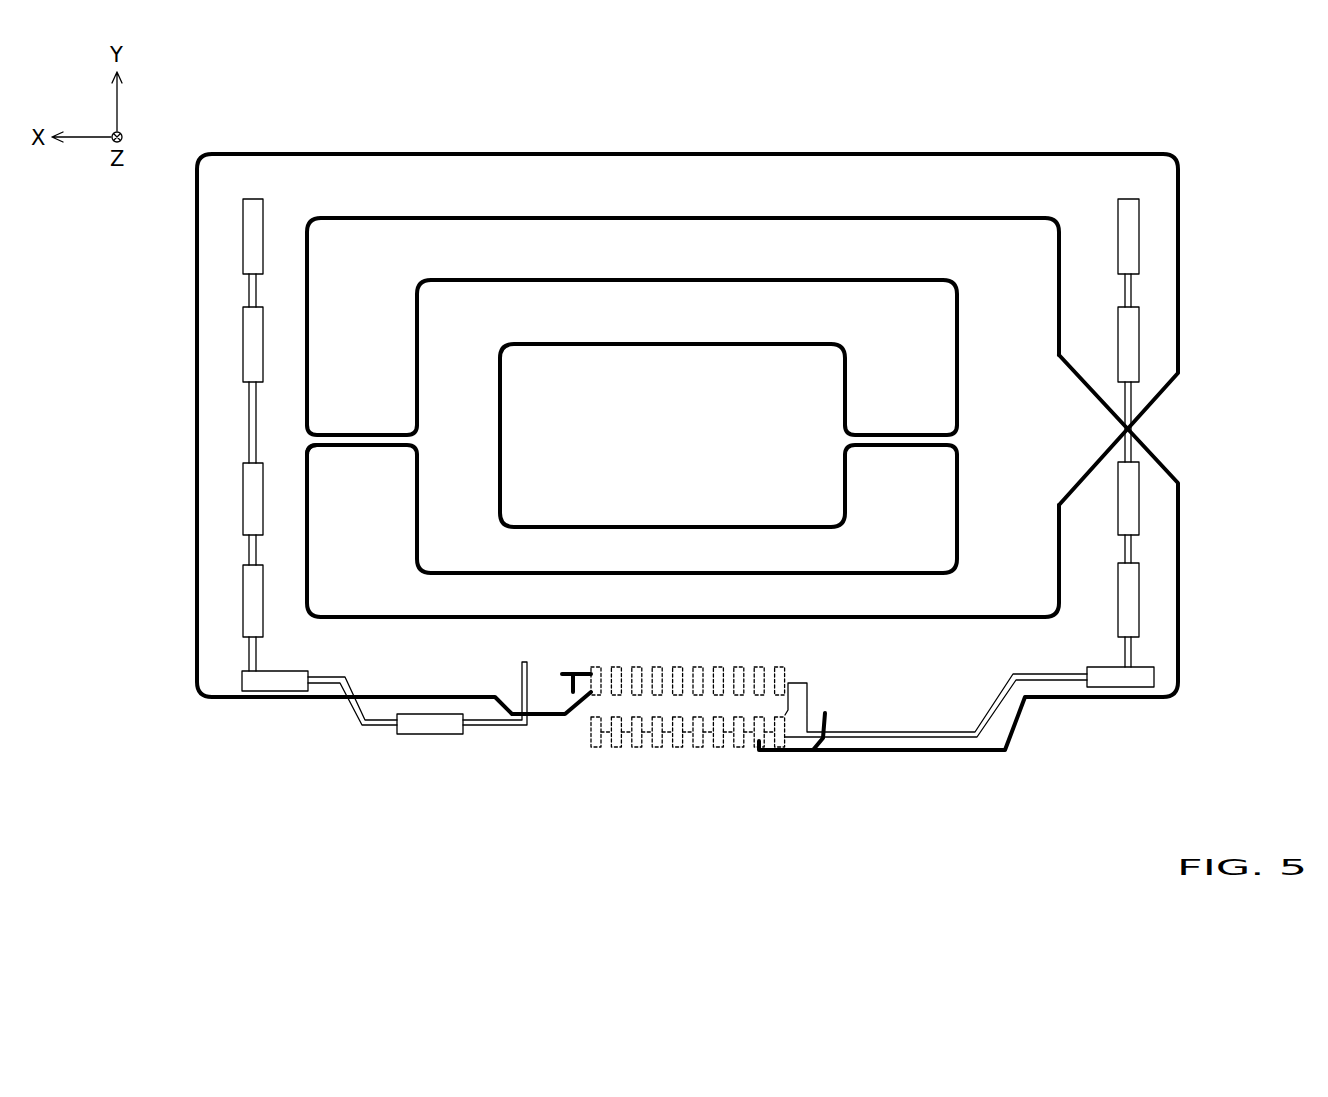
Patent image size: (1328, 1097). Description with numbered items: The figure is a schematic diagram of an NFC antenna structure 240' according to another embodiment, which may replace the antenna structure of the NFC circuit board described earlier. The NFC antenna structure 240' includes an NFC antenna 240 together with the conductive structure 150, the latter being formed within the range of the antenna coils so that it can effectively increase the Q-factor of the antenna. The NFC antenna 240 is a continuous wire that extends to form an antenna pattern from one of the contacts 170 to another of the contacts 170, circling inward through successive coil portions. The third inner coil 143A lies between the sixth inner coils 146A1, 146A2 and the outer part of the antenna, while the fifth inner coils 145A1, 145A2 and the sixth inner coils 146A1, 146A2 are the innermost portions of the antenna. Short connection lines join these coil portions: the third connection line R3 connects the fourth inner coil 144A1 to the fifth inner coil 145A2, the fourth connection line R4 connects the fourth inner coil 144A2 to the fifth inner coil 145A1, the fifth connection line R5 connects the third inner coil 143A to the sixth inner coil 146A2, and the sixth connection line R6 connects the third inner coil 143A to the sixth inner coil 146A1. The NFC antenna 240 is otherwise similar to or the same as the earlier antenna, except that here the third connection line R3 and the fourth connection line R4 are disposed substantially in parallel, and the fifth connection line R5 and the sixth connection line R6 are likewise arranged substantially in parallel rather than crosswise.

The NFC antenna structure 240' is at (687, 405).
The NFC antenna 240 is at (690, 361).
The third inner coil 143A is at (307, 330).
The sixth connection line R6 is at (365, 433).
The fifth connection line R5 is at (364, 448).
The sixth inner coil 146A1 is at (417, 357).
The sixth inner coil 146A2 is at (418, 512).
The fourth inner coil 144A1 is at (959, 357).
The fourth inner coil 144A2 is at (959, 503).
The fourth connection line R4 is at (903, 433).
The third connection line R3 is at (902, 447).
The fifth inner coil 145A1 is at (845, 387).
The fifth inner coil 145A2 is at (845, 482).
The conductive structure 150 is at (1165, 237).
The contact 170 is at (593, 748).